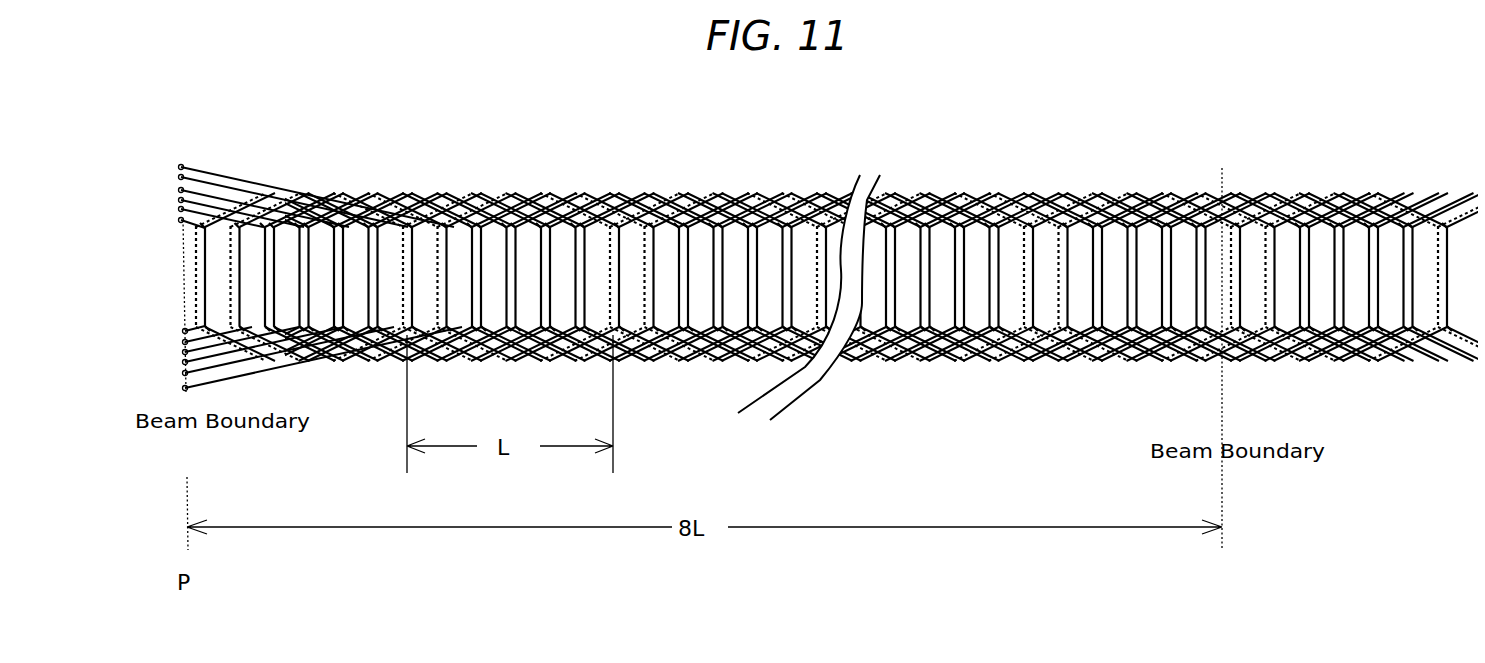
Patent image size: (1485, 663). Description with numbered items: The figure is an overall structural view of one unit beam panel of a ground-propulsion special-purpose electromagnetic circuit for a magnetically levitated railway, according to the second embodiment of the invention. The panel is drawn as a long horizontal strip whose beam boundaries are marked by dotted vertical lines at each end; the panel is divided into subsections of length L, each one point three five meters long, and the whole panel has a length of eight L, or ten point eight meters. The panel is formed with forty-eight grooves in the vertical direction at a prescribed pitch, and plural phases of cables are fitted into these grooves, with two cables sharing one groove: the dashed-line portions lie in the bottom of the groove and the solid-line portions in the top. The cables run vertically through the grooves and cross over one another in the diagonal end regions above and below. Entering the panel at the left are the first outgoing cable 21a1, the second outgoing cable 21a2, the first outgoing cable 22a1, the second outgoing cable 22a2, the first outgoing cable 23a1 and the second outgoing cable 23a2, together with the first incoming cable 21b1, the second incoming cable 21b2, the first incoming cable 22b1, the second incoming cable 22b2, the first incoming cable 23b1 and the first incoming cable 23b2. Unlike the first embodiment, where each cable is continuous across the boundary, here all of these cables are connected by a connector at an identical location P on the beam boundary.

The first outgoing cable 21a1 is at (181, 220).
The second outgoing cable 21a2 is at (181, 209).
The first outgoing cable 22a1 is at (181, 200).
The second outgoing cable 22a2 is at (181, 190).
The first outgoing cable 23a1 is at (181, 177).
The second outgoing cable 23a2 is at (181, 167).
The first incoming cable 21b1 is at (185, 331).
The second incoming cable 21b2 is at (185, 342).
The first incoming cable 22b1 is at (185, 352).
The second incoming cable 22b2 is at (185, 362).
The first incoming cable 23b1 is at (185, 373).
The first incoming cable 23b2 is at (185, 388).